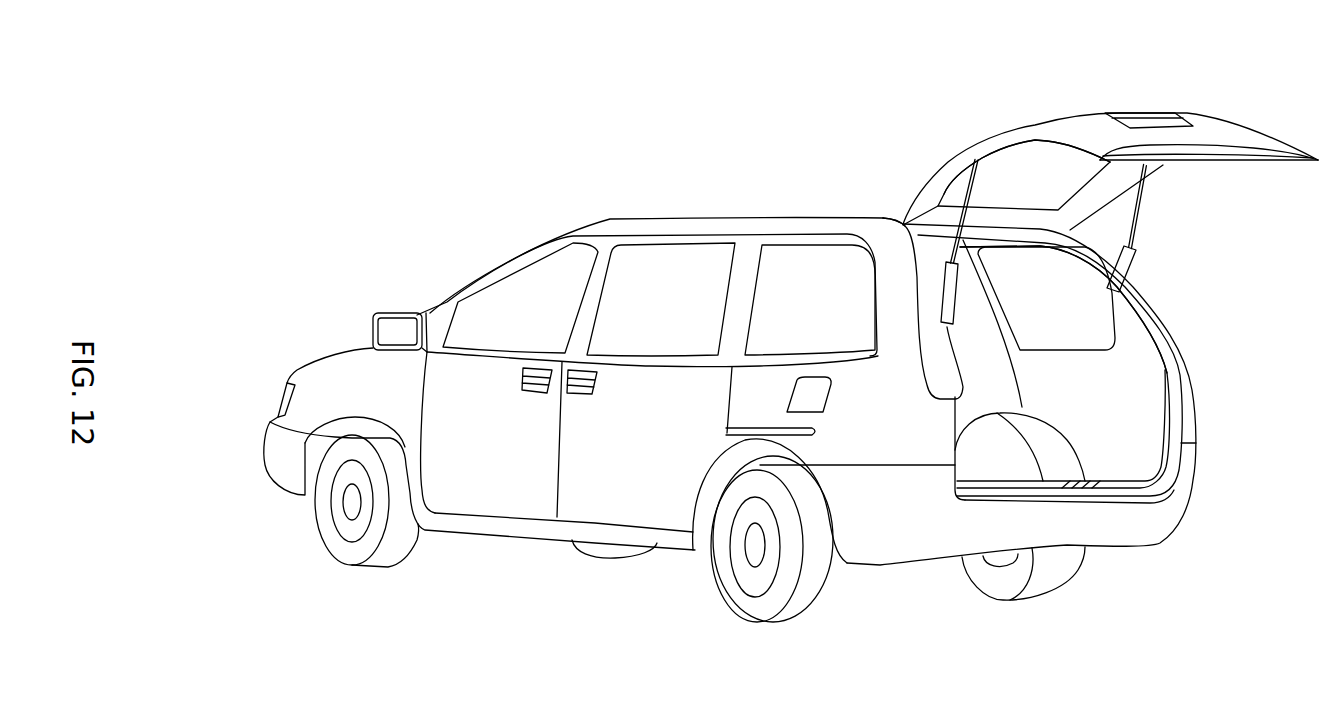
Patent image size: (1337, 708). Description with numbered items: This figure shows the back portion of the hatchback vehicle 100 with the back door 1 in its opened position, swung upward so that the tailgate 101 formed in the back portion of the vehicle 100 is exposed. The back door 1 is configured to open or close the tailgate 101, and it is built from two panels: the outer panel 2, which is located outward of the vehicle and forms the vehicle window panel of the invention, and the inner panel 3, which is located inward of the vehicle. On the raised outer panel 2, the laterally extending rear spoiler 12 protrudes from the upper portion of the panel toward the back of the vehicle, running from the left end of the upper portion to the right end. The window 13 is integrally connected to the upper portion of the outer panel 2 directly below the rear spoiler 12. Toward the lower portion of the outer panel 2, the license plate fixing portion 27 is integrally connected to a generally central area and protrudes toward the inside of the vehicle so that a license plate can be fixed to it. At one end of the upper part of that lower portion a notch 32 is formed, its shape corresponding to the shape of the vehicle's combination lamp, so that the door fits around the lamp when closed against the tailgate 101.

The hatchback vehicle 100 is at (793, 217).
The rear spoiler 12 is at (904, 224).
The outer panel 2 is at (1075, 130).
The notch 32 is at (1015, 138).
The window 13 is at (1015, 168).
The back door 1 is at (1207, 118).
The license plate fixing portion 27 is at (1150, 120).
The inner panel 3 is at (1097, 192).
The tailgate 101 is at (1152, 345).